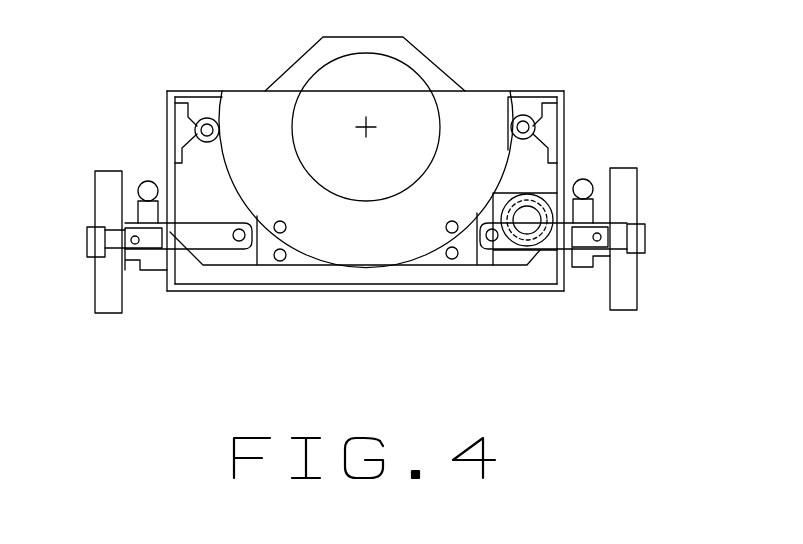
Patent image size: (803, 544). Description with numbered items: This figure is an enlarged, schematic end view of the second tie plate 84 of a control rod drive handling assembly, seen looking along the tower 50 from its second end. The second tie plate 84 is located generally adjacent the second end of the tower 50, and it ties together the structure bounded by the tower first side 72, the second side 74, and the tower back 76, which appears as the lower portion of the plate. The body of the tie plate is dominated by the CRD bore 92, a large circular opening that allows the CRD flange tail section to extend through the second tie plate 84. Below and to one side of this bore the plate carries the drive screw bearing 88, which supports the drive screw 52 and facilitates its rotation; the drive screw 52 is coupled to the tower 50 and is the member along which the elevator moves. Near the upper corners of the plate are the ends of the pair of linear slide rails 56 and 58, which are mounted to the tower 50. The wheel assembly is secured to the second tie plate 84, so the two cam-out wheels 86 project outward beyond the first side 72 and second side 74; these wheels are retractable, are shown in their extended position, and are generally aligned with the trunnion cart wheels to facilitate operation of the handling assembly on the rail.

The tower 50 is at (345, 310).
The drive screw 52 is at (557, 132).
The linear slide rail 56 is at (205, 120).
The linear slide rail 58 is at (525, 120).
The first side 72 is at (168, 127).
The second side 74 is at (565, 168).
The tower back 76 is at (428, 292).
The second tie plate 84 is at (295, 82).
The cam-out wheel 86 is at (95, 202).
The drive screw bearing 88 is at (528, 214).
The CRD bore 92 is at (413, 110).